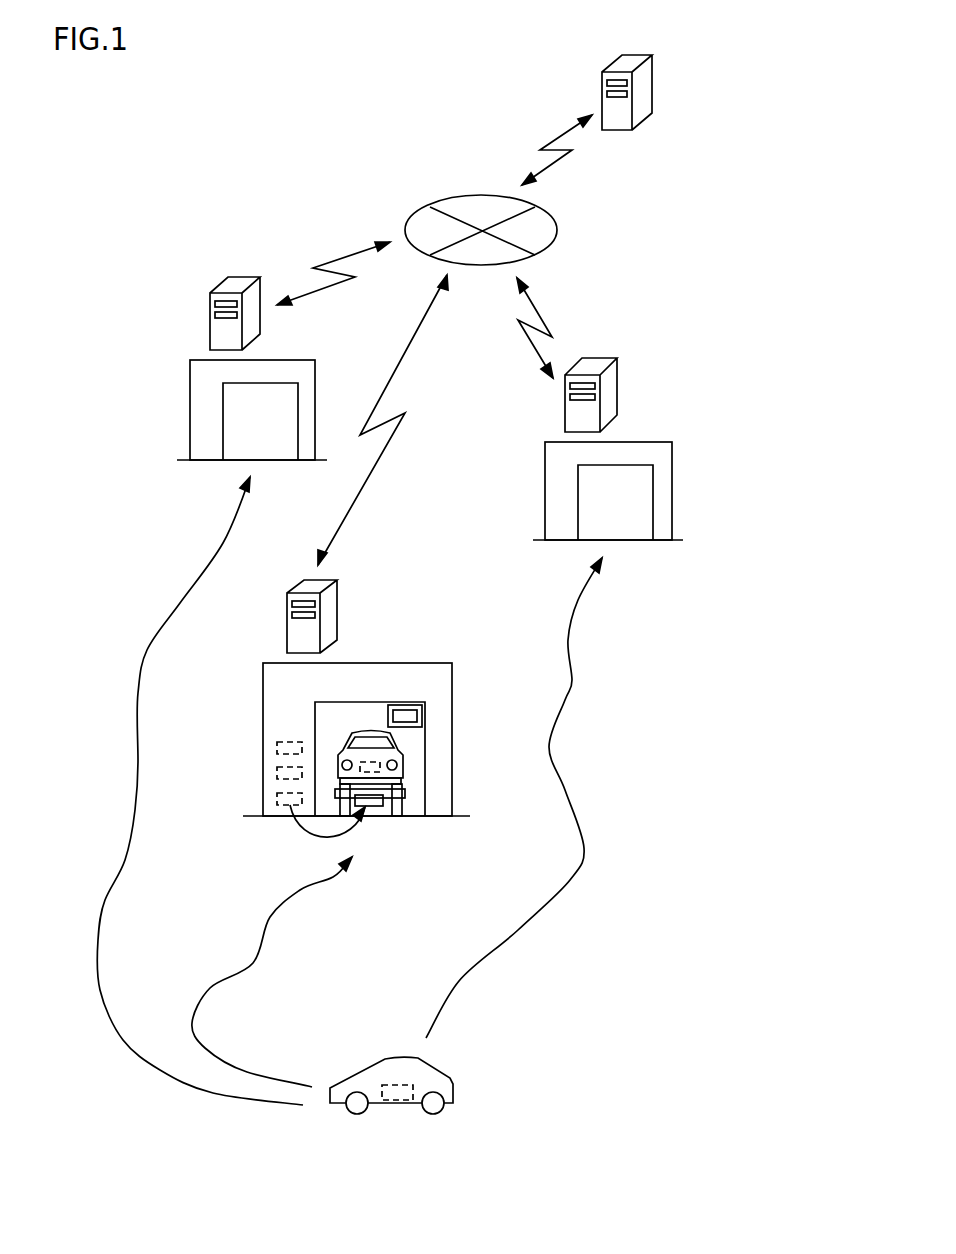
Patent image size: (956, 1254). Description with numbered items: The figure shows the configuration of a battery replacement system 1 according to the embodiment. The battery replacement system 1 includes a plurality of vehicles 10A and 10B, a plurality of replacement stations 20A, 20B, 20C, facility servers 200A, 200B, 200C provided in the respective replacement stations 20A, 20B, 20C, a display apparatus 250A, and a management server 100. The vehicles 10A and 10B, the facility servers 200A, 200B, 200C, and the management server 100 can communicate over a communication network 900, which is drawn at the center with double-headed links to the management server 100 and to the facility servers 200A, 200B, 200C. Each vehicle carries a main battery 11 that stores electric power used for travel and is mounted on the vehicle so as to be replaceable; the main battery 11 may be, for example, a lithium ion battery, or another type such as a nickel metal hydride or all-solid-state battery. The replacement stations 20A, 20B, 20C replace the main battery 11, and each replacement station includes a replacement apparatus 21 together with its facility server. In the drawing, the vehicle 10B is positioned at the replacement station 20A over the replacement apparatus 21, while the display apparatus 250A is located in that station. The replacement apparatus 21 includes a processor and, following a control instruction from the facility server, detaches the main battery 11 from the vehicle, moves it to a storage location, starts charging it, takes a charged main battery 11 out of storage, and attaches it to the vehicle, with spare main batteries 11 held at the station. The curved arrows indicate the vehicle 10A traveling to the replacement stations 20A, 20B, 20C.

The battery replacement system 1 is at (110, 83).
The management server 100 is at (634, 80).
The communication network 900 is at (558, 228).
The facility server 200A is at (323, 588).
The facility server 200B is at (603, 382).
The facility server 200C is at (208, 312).
The replacement station 20A is at (428, 662).
The replacement station 20B is at (674, 459).
The replacement station 20C is at (190, 383).
The display apparatus 250A is at (394, 704).
The vehicle 10A is at (431, 1062).
The vehicle 10B is at (366, 731).
The main battery 11 is at (277, 797).
The replacement apparatus 21 is at (408, 790).